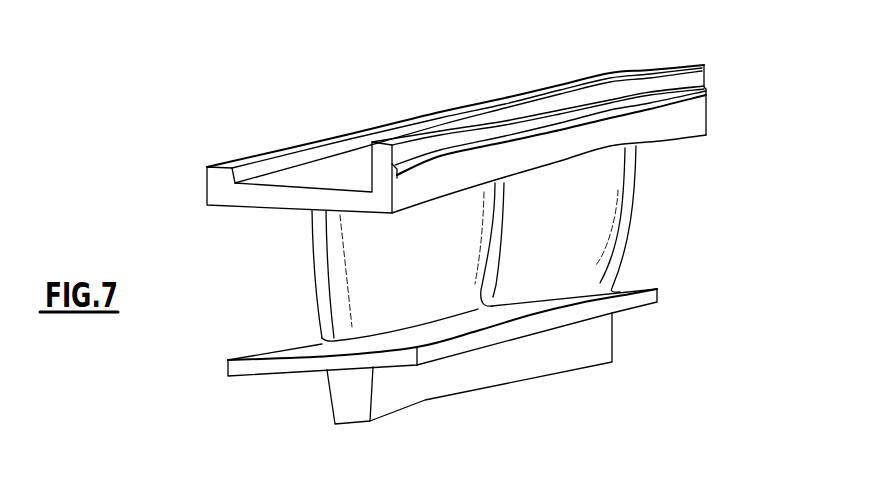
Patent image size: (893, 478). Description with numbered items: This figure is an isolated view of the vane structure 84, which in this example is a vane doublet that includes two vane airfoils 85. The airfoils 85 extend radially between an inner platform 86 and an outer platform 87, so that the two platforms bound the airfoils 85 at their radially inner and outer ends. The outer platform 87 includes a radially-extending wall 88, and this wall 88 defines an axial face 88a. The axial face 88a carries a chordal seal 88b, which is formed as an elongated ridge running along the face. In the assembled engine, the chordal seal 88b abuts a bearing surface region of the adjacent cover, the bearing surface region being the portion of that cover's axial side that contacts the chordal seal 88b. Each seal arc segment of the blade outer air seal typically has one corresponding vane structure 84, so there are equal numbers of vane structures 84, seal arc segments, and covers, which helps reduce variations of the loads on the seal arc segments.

The vane structure 84 is at (236, 303).
The vane airfoil 85 is at (325, 300).
The inner platform 86 is at (675, 305).
The outer platform 87 is at (228, 216).
The radially-extending wall 88 is at (377, 162).
The axial face 88a is at (722, 98).
The chordal seal 88b is at (650, 93).